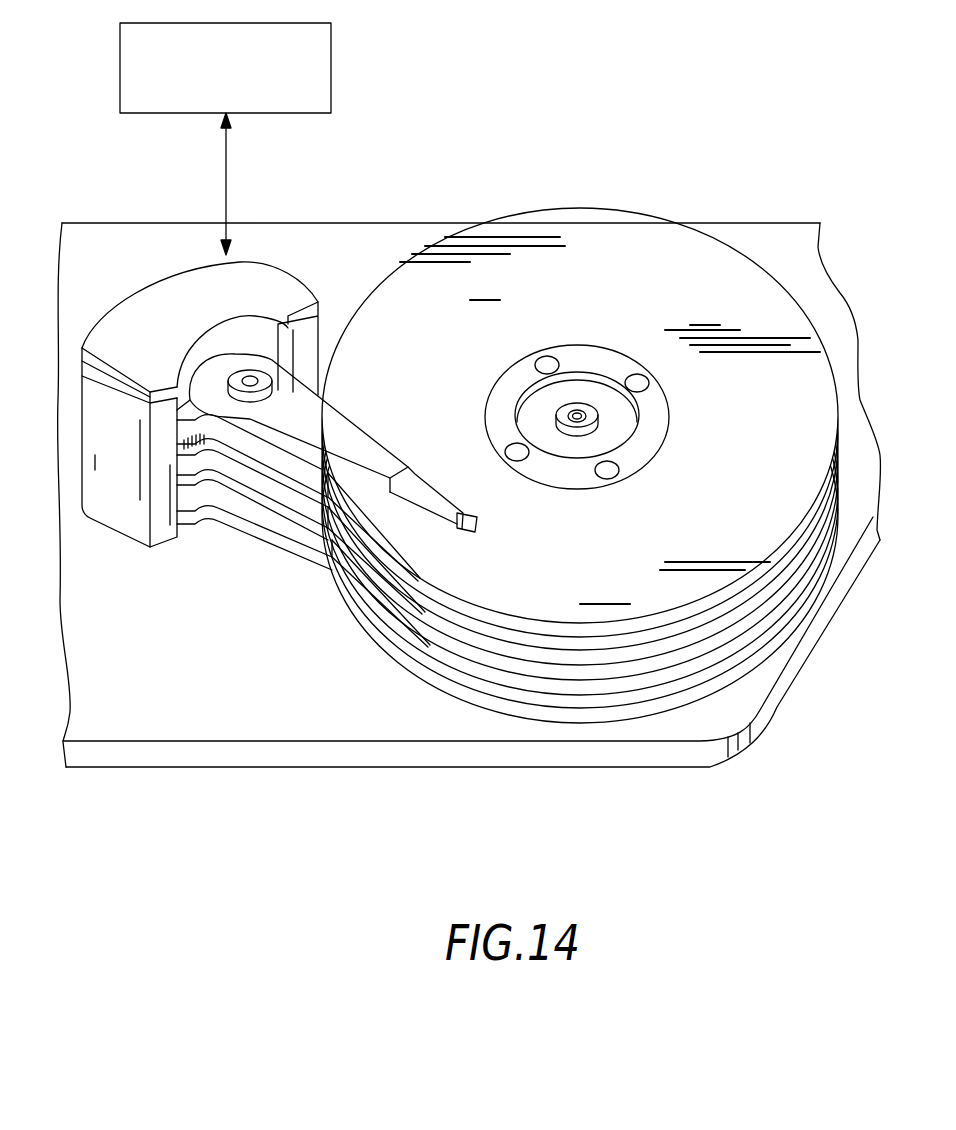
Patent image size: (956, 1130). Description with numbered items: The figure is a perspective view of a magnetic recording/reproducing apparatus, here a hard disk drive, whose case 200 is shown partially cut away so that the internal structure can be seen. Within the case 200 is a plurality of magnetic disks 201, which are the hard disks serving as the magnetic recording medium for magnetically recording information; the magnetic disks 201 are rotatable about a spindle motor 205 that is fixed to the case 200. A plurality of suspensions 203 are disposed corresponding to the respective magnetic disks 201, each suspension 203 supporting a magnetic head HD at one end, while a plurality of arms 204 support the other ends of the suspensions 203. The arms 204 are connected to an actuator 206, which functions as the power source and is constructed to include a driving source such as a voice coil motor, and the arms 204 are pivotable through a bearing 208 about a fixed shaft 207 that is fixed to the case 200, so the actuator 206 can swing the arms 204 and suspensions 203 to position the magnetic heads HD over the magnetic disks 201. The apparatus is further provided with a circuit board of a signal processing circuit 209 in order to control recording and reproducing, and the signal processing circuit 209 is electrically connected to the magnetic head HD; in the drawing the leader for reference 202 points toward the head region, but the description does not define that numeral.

The case 200 is at (732, 232).
The magnetic disk 201 is at (742, 287).
The magnetic head slider 202 is at (468, 513).
The suspension 203 is at (413, 488).
The arm 204 is at (298, 400).
The spindle motor 205 is at (577, 428).
The actuator 206 is at (136, 290).
The fixed shaft 207 is at (250, 380).
The bearing 208 is at (235, 380).
The signal processing circuit 209 is at (331, 38).
The magnetic head HD is at (482, 499).